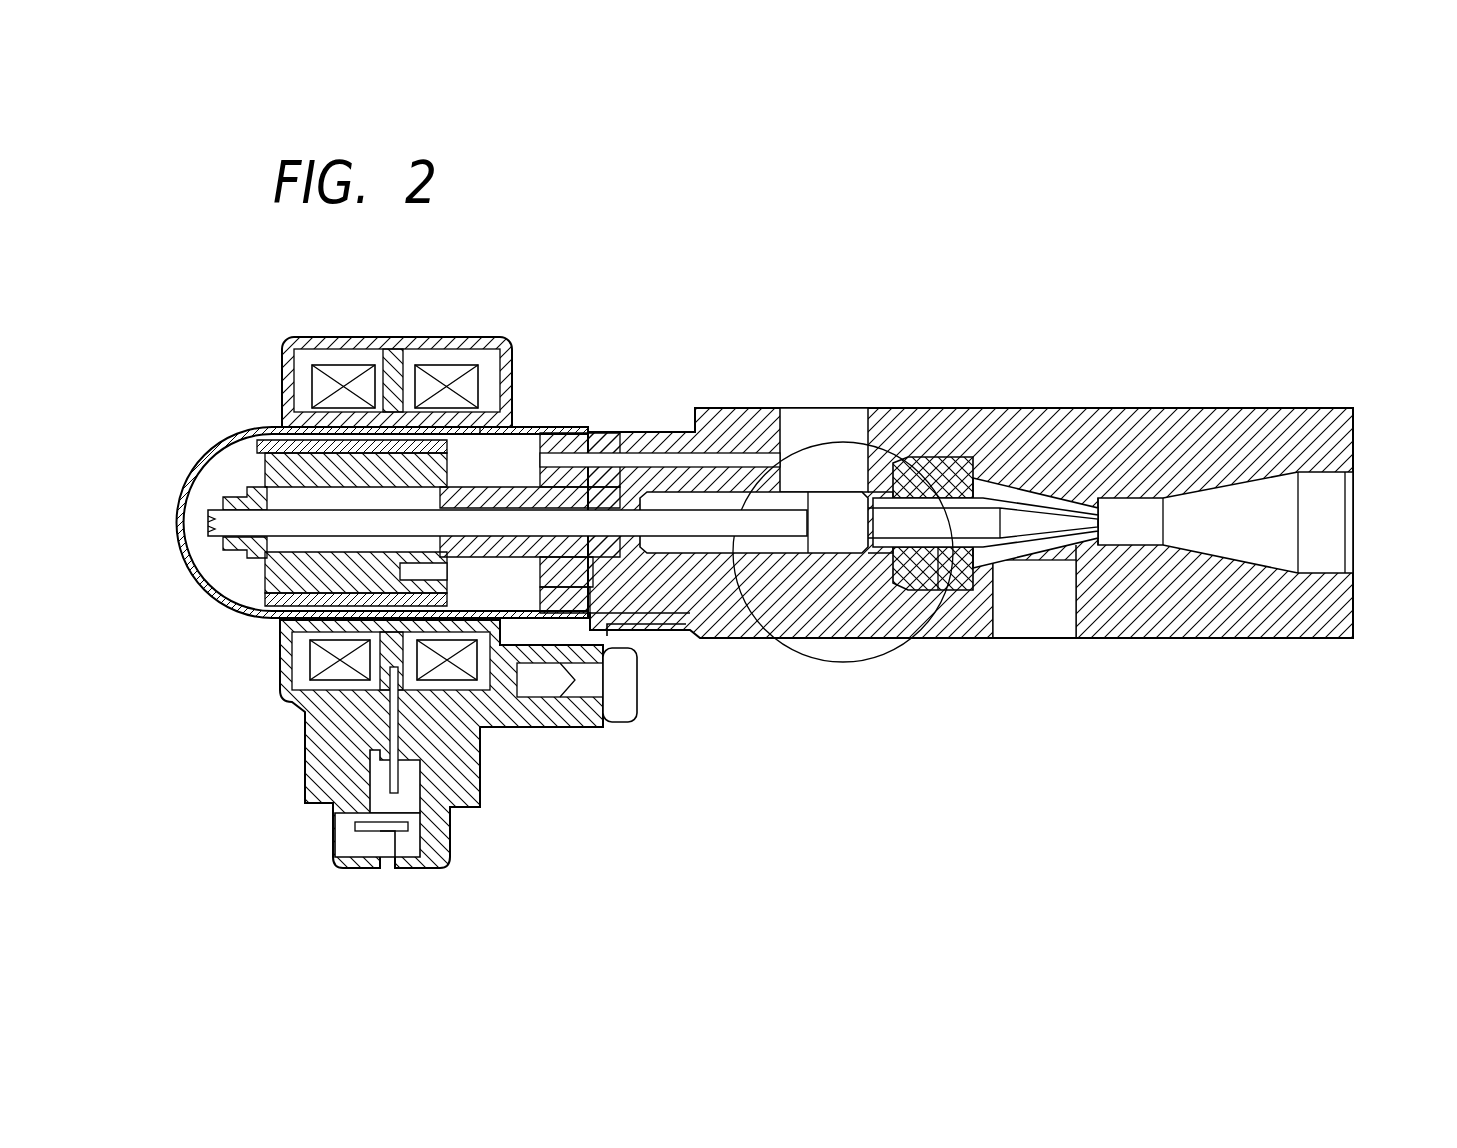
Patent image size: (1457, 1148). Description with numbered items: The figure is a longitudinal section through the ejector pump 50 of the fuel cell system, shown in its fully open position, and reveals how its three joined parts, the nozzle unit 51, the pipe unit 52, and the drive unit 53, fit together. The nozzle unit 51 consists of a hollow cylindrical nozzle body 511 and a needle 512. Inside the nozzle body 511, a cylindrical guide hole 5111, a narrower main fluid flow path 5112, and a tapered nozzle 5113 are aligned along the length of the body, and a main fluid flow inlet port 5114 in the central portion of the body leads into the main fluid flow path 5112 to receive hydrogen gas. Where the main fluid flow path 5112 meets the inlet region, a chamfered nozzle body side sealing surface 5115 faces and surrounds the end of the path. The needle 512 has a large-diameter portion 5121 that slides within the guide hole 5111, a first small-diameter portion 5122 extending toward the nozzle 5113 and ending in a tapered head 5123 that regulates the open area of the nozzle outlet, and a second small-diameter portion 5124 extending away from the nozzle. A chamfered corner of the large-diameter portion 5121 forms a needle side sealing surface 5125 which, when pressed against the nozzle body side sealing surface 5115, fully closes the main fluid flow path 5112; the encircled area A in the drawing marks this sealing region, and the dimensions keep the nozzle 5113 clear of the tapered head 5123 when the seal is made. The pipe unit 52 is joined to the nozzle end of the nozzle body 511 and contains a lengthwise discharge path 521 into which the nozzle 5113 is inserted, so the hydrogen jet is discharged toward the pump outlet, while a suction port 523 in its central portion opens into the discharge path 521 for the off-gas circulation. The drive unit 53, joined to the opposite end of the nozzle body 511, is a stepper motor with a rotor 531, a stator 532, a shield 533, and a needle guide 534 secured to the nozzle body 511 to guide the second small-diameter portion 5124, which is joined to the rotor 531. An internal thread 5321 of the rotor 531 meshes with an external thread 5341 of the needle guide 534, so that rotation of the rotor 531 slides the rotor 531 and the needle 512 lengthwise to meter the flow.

The ejector pump 50 is at (860, 262).
The nozzle unit 51 is at (706, 404).
The nozzle body 511 is at (757, 641).
The cylindrical guide hole 5111 is at (637, 455).
The main fluid flow path 5112 is at (940, 560).
The tapered nozzle 5113 is at (1013, 478).
The main fluid flow inlet port 5114 is at (793, 406).
The nozzle body side sealing surface 5115 is at (880, 470).
The needle 512 is at (917, 520).
The large-diameter portion 5121 is at (704, 545).
The first small-diameter portion 5122 is at (962, 523).
The tapered head 5123 is at (1062, 500).
The second small-diameter portion 5124 is at (557, 630).
The needle side sealing surface 5125 is at (828, 552).
The pipe unit 52 is at (1210, 643).
The discharge path 521 is at (1334, 508).
The suction port 523 is at (1046, 595).
The drive unit 53 is at (267, 732).
The rotor 531 is at (257, 590).
The stator 532 is at (333, 672).
The internal thread 5321 is at (248, 498).
The shield 533 is at (197, 580).
The needle guide 534 is at (543, 445).
The external thread 5341 is at (512, 427).
The region A is at (848, 664).